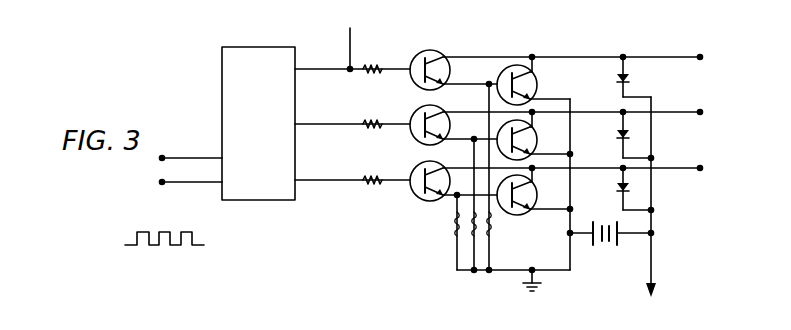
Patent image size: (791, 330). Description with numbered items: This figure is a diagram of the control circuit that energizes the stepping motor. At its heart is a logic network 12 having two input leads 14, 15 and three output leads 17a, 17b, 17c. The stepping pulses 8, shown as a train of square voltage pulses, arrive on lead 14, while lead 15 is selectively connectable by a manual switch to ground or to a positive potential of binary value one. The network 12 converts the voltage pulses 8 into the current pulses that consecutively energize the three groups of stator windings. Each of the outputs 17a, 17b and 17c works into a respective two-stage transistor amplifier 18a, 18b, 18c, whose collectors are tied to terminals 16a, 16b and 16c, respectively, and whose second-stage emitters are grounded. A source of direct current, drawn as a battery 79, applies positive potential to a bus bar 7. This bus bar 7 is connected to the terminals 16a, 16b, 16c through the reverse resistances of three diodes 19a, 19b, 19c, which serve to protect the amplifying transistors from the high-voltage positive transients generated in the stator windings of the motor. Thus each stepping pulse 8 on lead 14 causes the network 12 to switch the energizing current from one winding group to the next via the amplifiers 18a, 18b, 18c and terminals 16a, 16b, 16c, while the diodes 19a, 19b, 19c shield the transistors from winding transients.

The logic network 12 is at (268, 47).
The input lead 15 is at (191, 157).
The input lead 14 is at (200, 182).
The stepping pulses 8 is at (160, 230).
The output lead 17a is at (323, 66).
The output lead 17b is at (323, 121).
The output lead 17c is at (323, 176).
The two-stage transistor amplifier 18a is at (478, 66).
The two-stage transistor amplifier 18b is at (465, 131).
The two-stage transistor amplifier 18c is at (465, 184).
The diode 19a is at (628, 75).
The diode 19b is at (630, 135).
The diode 19c is at (630, 190).
The terminal 16a is at (702, 56).
The terminal 16b is at (702, 112).
The terminal 16c is at (702, 168).
The battery 79 is at (610, 248).
The bus bar 7 is at (655, 255).